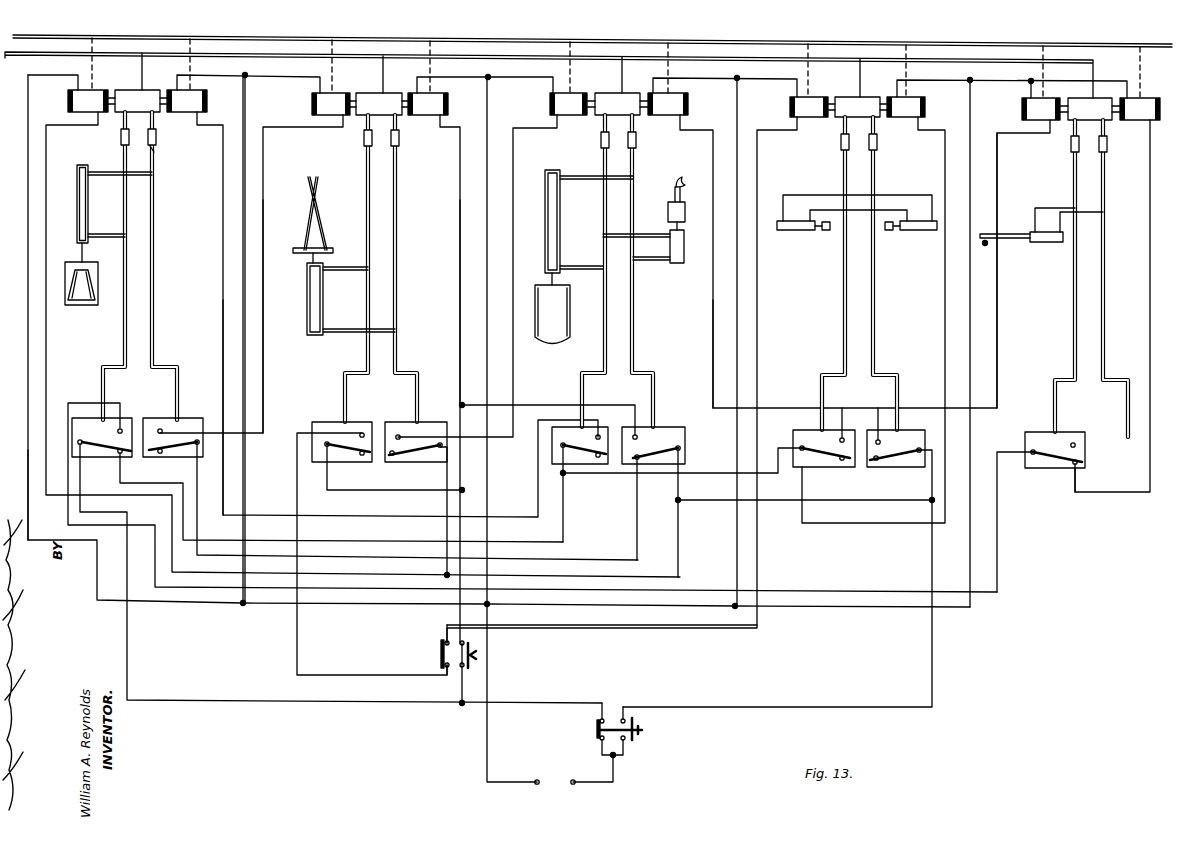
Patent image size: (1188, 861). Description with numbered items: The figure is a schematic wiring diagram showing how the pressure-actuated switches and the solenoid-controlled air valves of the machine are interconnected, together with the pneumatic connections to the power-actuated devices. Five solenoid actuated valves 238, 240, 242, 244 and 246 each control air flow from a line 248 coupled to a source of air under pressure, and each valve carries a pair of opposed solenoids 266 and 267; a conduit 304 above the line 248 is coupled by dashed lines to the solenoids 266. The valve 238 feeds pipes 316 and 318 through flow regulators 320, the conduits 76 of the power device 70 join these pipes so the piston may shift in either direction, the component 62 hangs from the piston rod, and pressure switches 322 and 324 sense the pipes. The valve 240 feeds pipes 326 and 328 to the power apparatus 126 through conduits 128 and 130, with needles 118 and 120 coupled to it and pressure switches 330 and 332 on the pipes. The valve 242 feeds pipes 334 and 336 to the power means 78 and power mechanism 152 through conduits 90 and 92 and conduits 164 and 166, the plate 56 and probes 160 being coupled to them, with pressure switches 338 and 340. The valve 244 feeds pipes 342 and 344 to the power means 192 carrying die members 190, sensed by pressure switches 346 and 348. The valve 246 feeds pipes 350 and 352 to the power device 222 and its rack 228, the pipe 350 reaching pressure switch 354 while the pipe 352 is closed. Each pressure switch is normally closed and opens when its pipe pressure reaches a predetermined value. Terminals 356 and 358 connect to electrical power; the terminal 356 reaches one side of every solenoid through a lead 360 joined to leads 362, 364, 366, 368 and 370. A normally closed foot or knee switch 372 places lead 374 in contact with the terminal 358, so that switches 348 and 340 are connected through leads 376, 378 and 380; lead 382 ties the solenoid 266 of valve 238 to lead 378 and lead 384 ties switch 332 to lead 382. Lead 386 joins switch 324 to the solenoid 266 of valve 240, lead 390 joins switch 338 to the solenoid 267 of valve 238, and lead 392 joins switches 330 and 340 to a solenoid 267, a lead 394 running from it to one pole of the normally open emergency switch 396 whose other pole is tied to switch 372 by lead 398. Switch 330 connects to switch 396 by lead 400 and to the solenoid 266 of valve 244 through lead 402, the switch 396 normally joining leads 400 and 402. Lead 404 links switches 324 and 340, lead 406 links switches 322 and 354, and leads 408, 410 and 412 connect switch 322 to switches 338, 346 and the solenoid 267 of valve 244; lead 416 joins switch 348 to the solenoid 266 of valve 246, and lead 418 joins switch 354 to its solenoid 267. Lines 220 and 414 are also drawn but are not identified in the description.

The conduit 304 is at (120, 42).
The line 248 is at (18, 86).
The lead 362 is at (24, 474).
The solenoid 266 is at (70, 106).
The solenoid 267 is at (176, 110).
The solenoid actuated valve 238 is at (124, 90).
The solenoid actuated valve 240 is at (370, 90).
The solenoid actuated valve 242 is at (606, 90).
The solenoid actuated valve 244 is at (844, 92).
The solenoid actuated valve 246 is at (1110, 118).
The flow regulator 320 is at (120, 139).
The lead 220 is at (154, 152).
The pipe 316 is at (117, 202).
The pipe 318 is at (156, 210).
The pipe 326 is at (366, 217).
The pipe 328 is at (398, 216).
The pipe 334 is at (600, 338).
The pipe 336 is at (636, 318).
The pipe 342 is at (838, 280).
The pipe 344 is at (875, 288).
The pipe 350 is at (1072, 317).
The pipe 352 is at (1128, 318).
The power device 70 is at (80, 209).
The conduit 76 is at (106, 175).
The component 62 is at (96, 290).
The lead 390 is at (222, 331).
The needle 120 is at (306, 222).
The needle 118 is at (322, 240).
The power apparatus 126 is at (308, 315).
The conduit 128 is at (340, 272).
The conduit 130 is at (336, 333).
The lead 386 is at (318, 272).
The lead 392 is at (460, 257).
The power means 78 is at (546, 222).
The conduit 90 is at (584, 180).
The conduit 92 is at (579, 262).
The plate 56 is at (536, 338).
The conduit 164 is at (666, 219).
The probe 160 is at (681, 178).
The power mechanism 152 is at (682, 253).
The conduit 166 is at (652, 258).
The conductor 414 is at (712, 342).
The power means 192 is at (790, 231).
The die member 190 is at (827, 230).
The power device 222 is at (1047, 243).
The rack 228 is at (1008, 230).
The lead 416 is at (998, 310).
The pressure switch 322 is at (131, 415).
The pressure switch 324 is at (193, 416).
The lead 364 is at (250, 486).
The pressure switch 330 is at (322, 406).
The pressure switch 332 is at (433, 416).
The pressure switch 338 is at (550, 446).
The pressure switch 340 is at (670, 422).
The pressure switch 346 is at (794, 434).
The pressure switch 348 is at (903, 460).
The pressure switch 354 is at (1026, 430).
The lead 360 is at (488, 680).
The lead 368 is at (736, 560).
The lead 366 is at (495, 500).
The lead 384 is at (443, 504).
The lead 408 is at (333, 542).
The lead 404 is at (578, 558).
The lead 410 is at (609, 476).
The lead 380 is at (682, 494).
The lead 382 is at (657, 570).
The lead 378 is at (771, 503).
The lead 376 is at (925, 475).
The lead 412 is at (869, 525).
The lead 406 is at (780, 592).
The lead 370 is at (974, 607).
The lead 374 is at (935, 668).
The lead 402 is at (703, 628).
The lead 418 is at (1112, 493).
The lead 400 is at (298, 644).
The lead 394 is at (453, 612).
The lead 398 is at (545, 703).
The emergency switch 396 is at (438, 656).
The switch 372 is at (632, 750).
The terminal 356 is at (537, 785).
The terminal 358 is at (574, 785).